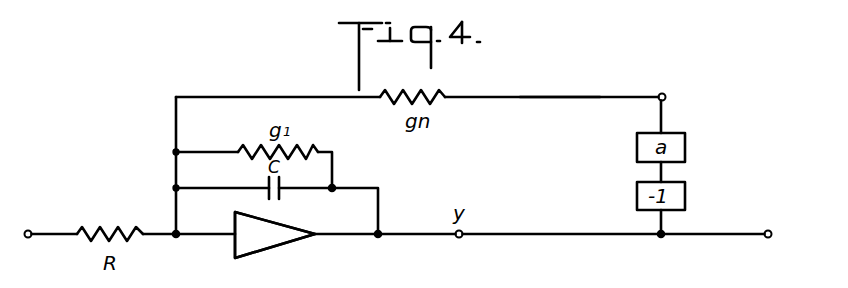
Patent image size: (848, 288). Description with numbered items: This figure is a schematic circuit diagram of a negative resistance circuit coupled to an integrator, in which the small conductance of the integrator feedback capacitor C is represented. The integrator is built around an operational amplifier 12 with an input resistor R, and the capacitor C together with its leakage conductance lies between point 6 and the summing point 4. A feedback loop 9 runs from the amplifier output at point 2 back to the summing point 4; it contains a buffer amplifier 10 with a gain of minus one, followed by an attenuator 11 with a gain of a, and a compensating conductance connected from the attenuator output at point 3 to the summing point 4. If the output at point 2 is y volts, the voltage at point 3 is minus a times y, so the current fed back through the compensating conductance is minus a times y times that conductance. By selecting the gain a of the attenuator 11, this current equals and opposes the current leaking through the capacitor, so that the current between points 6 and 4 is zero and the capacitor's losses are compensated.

The output point 2 is at (459, 251).
The point 3 is at (668, 93).
The summing point 4 is at (164, 189).
The point 6 is at (166, 153).
The feedback loop 9 is at (557, 93).
The buffer amplifier 10 is at (637, 199).
The attenuator 11 is at (637, 147).
The operational amplifier 12 is at (262, 240).